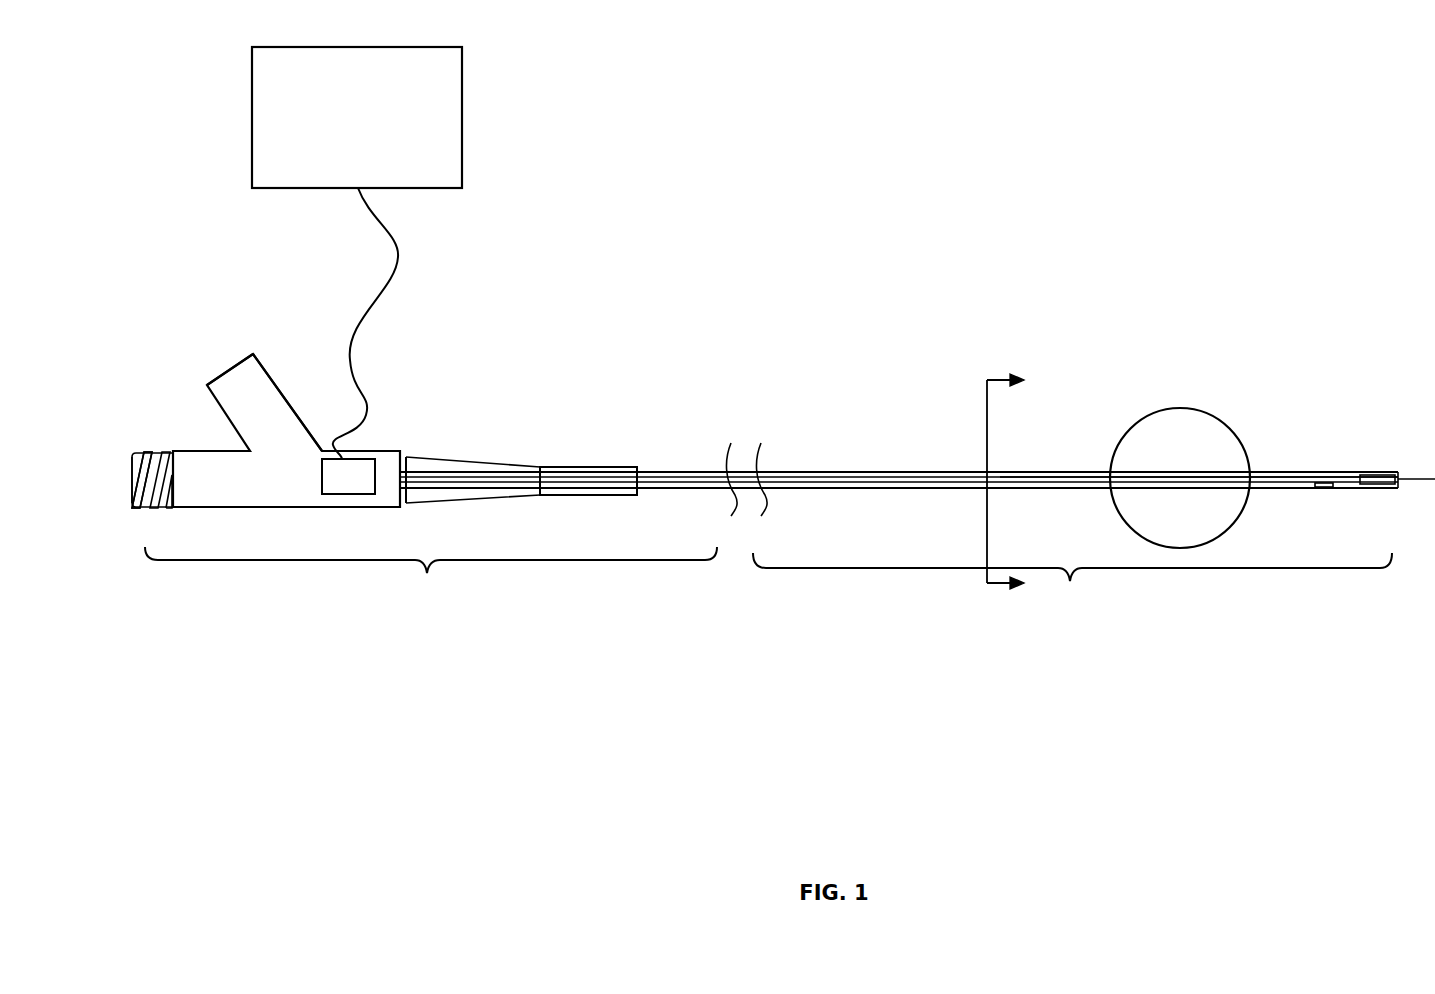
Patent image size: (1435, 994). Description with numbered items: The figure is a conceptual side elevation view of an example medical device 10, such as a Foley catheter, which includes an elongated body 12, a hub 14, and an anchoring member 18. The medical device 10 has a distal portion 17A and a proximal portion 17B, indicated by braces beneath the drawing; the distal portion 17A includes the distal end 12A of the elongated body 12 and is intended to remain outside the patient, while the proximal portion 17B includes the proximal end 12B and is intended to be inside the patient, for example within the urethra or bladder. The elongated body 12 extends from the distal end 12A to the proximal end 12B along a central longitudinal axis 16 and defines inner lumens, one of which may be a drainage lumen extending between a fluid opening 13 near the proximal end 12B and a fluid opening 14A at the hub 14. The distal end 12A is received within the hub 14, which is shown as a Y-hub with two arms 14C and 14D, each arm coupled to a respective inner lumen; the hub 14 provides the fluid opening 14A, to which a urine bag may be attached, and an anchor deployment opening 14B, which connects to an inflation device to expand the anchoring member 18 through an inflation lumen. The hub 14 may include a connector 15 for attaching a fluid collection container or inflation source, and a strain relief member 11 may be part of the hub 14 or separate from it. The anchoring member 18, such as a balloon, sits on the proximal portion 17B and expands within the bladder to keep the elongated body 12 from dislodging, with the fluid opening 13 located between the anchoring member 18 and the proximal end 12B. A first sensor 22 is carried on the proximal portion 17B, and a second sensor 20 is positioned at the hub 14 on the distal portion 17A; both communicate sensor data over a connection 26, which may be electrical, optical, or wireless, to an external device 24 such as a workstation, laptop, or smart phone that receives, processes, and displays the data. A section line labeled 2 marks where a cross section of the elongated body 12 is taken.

The medical device 10 is at (847, 393).
The strain relief member 11 is at (545, 468).
The elongated body 12 is at (884, 469).
The distal end 12A is at (127, 505).
The proximal end 12B is at (1398, 470).
The fluid opening 13 is at (1328, 488).
The hub 14 is at (377, 449).
The fluid opening 14A is at (134, 460).
The anchor deployment opening 14B is at (243, 357).
The arm 14C is at (228, 507).
The arm 14D is at (300, 420).
The connector 15 is at (132, 478).
The central longitudinal axis 16 is at (1058, 472).
The distal portion 17A is at (431, 576).
The proximal portion 17B is at (1072, 586).
The anchoring member 18 is at (1178, 407).
The section line 2- 2 is at (1016, 483).
The second sensor 20 is at (347, 490).
The first sensor 22 is at (1378, 486).
The external device 24 is at (357, 117).
The connection 26 is at (400, 253).